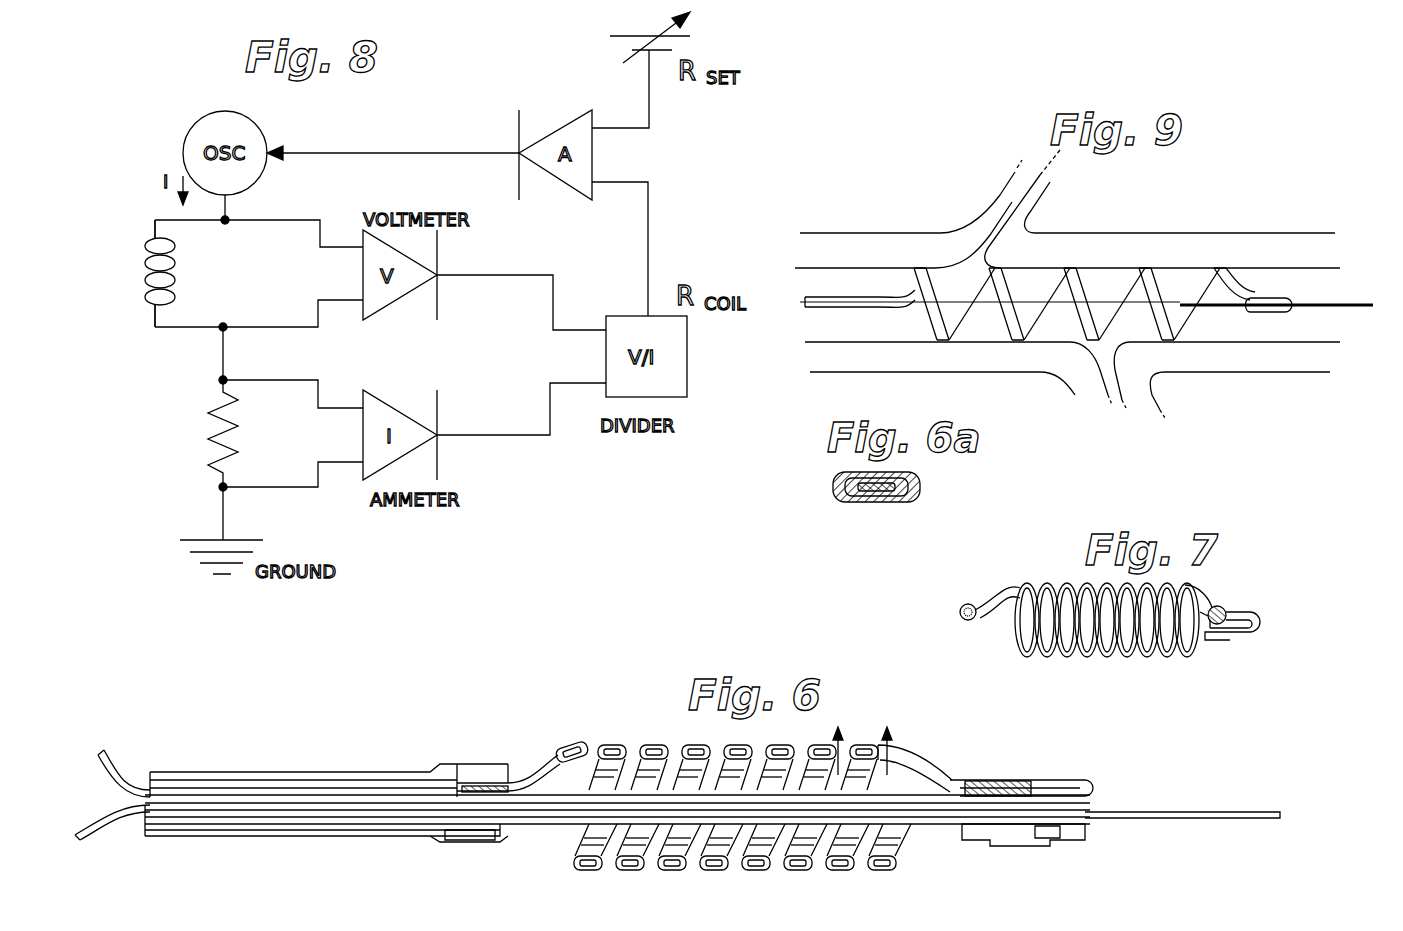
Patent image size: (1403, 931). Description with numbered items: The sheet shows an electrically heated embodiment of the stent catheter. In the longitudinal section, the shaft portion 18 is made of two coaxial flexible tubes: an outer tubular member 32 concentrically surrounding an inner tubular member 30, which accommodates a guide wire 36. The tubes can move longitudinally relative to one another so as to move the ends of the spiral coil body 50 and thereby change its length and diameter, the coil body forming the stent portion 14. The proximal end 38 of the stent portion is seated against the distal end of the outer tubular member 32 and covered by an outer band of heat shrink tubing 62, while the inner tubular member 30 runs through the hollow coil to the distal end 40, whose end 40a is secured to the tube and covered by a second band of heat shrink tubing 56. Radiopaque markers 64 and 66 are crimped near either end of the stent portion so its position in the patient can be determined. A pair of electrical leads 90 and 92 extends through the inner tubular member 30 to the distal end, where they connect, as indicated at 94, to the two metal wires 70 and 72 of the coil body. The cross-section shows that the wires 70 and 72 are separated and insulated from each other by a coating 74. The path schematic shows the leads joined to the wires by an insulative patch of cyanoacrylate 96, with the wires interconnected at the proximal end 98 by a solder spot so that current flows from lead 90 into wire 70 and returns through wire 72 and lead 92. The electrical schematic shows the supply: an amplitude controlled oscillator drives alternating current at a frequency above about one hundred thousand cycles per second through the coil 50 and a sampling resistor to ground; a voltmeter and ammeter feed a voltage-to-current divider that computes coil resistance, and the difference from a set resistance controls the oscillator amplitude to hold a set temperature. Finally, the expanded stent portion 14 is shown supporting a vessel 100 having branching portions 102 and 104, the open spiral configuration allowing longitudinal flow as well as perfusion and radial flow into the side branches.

In FIG. 8, the stent portion 14 is at (157, 273).
In FIG. 9, the stent portion 14 is at (1095, 280).
In FIG. 6, the stent portion 14 is at (745, 780).
In FIG. 6, the shaft portion 18 is at (669, 780).
In FIG. 6, the inner tubular member 30 is at (560, 825).
In FIG. 9, the outer tubular member 32 is at (812, 295).
In FIG. 6, the outer tubular member 32 is at (150, 772).
In FIG. 9, the guide wire 36 is at (1333, 310).
In FIG. 6, the guide wire 36 is at (1230, 812).
In FIG. 6, the proximal end 38 is at (550, 757).
In FIG. 6, the distal end 40 is at (935, 760).
In FIG. 6, the end of end portion 40a is at (990, 780).
In FIG. 8, the spiral coil body 50 is at (172, 274).
In FIG. 7, the spiral coil body 50 is at (1110, 655).
In FIG. 6, the second band of heat shrink tubing 56 is at (1068, 778).
In FIG. 6, the outer band of heat shrink tubing 62 is at (358, 772).
In FIG. 6, the radiopaque marker 64 is at (1055, 828).
In FIG. 6, the radiopaque marker 66 is at (448, 842).
In FIG. 6A, the metal wire 70 is at (865, 500).
In FIG. 7, the metal wire 70 is at (1226, 612).
In FIG. 6, the metal wire 70 is at (612, 745).
In FIG. 6A, the metal wire 72 is at (895, 498).
In FIG. 7, the metal wire 72 is at (1195, 592).
In FIG. 6, the metal wire 72 is at (656, 732).
In FIG. 6A, the coating 74 is at (920, 478).
In FIG. 6, the coating 74 is at (850, 870).
In FIG. 8, the electrical lead 90 is at (155, 220).
In FIG. 7, the electrical lead 90 is at (1198, 622).
In FIG. 6, the electrical lead 90 is at (108, 745).
In FIG. 8, the electrical lead 92 is at (155, 327).
In FIG. 7, the electrical lead 92 is at (1208, 638).
In FIG. 6, the electrical lead 92 is at (77, 830).
In FIG. 6, the connection 94 is at (1062, 794).
In FIG. 7, the insulative patch of adhesive 96 is at (1255, 618).
In FIG. 7, the proximal end 98 is at (963, 606).
In FIG. 9, the vessel 100 is at (865, 233).
In FIG. 9, the branching portion 102 is at (1050, 210).
In FIG. 9, the branching portion 104 is at (1150, 378).